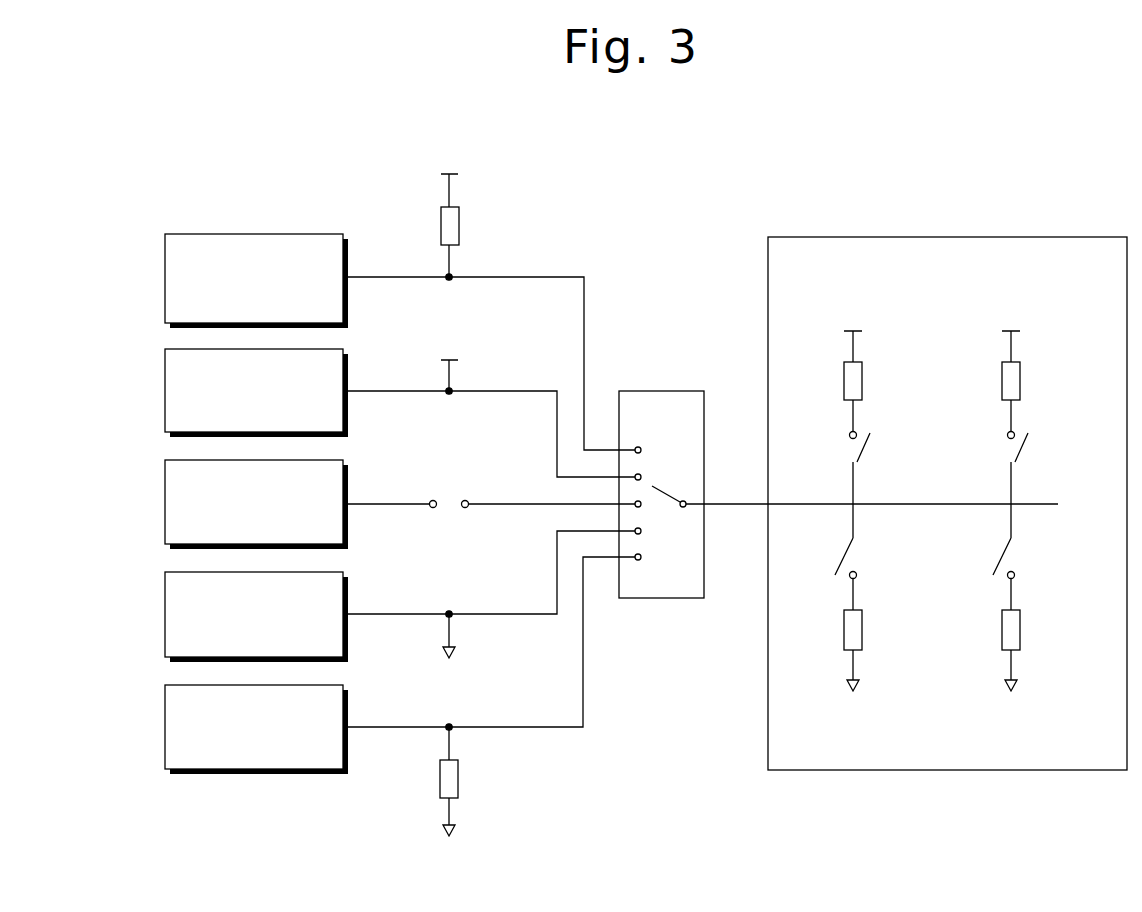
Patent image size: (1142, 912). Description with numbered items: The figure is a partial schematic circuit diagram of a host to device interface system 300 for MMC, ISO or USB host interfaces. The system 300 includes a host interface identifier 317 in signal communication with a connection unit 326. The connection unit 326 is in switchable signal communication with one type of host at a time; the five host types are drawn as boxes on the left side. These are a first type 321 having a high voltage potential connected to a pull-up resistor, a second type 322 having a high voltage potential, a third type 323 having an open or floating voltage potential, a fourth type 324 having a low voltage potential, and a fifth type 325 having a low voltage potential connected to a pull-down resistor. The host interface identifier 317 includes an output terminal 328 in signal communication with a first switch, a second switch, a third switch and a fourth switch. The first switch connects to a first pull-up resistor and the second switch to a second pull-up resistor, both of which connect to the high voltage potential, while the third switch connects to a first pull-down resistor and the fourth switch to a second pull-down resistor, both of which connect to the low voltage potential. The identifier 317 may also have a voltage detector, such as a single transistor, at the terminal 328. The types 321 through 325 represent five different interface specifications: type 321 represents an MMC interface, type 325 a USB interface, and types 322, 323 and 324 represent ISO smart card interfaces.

The interface system 300 is at (678, 206).
The host interface identifier 317 is at (930, 273).
The first type 321 is at (157, 281).
The second type 322 is at (157, 395).
The third type 323 is at (157, 508).
The fourth type 324 is at (157, 618).
The fifth type 325 is at (157, 731).
The connection unit 326 is at (648, 425).
The output terminal 328 is at (688, 502).